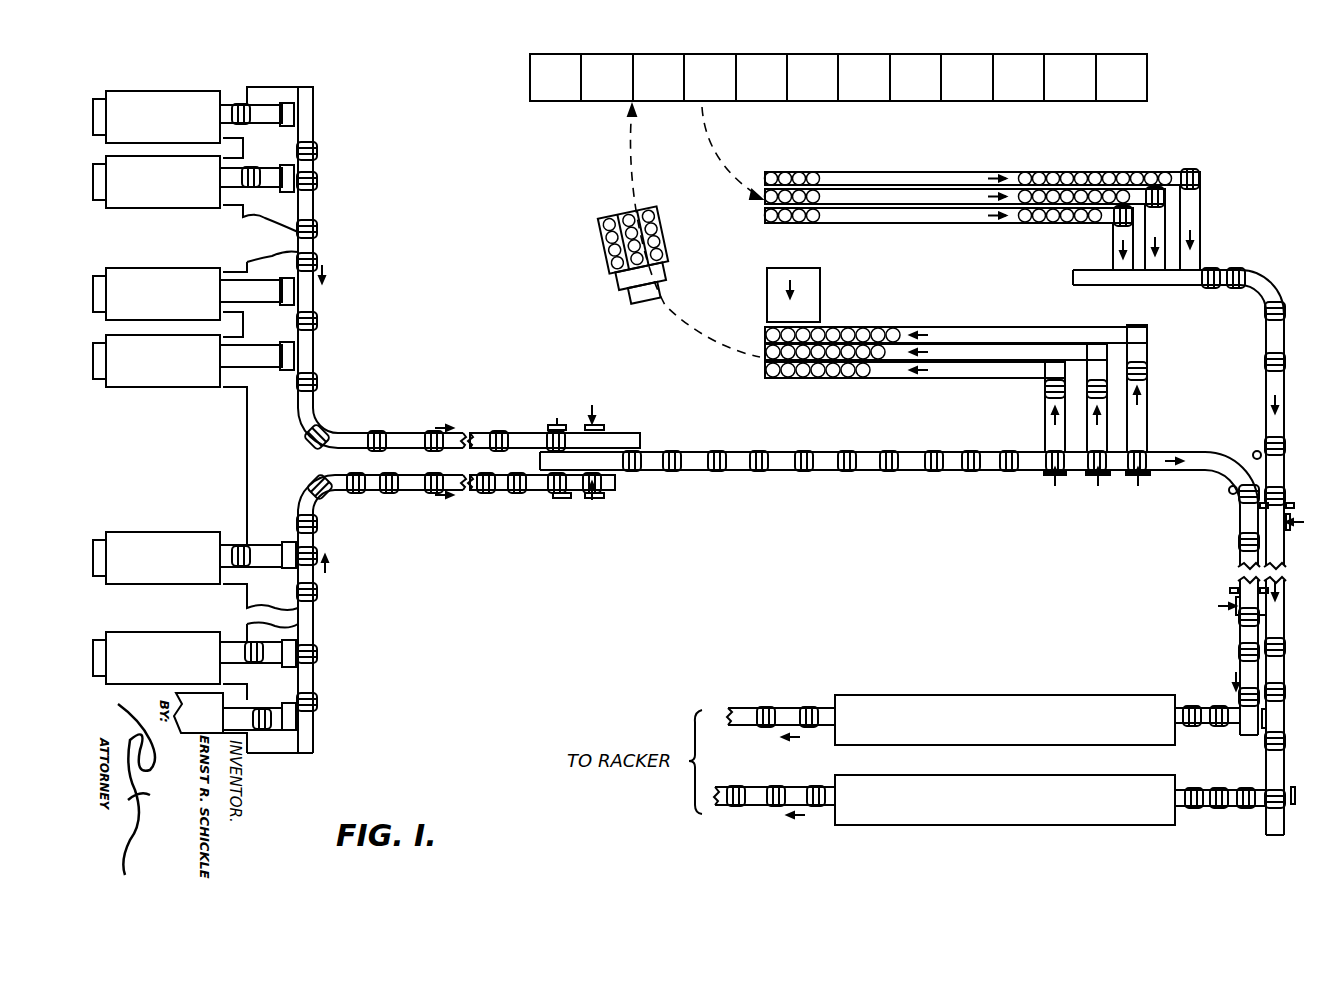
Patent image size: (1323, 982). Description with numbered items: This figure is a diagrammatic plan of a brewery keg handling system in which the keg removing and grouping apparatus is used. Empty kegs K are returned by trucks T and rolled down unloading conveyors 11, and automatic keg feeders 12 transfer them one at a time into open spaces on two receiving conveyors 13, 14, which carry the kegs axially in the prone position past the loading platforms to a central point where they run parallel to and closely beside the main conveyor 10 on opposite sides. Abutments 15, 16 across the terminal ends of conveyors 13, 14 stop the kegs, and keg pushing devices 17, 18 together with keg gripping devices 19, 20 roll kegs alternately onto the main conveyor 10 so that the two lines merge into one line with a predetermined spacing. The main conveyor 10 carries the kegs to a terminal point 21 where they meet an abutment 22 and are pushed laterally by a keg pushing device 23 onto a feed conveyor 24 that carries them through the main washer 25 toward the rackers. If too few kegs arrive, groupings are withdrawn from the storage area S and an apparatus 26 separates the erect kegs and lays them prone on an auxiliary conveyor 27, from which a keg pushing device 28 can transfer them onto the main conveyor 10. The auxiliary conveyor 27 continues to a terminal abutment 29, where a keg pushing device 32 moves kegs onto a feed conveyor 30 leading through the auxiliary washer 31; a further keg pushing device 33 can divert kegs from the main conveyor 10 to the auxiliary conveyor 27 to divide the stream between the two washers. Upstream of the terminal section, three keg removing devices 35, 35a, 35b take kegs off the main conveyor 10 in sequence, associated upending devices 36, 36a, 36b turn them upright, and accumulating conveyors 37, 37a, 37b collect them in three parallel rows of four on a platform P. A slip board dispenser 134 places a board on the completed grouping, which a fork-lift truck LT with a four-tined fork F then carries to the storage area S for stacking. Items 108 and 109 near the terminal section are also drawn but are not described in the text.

The main conveyor 10 is at (790, 470).
The unloading conveyor 11 is at (262, 108).
The automatic keg feeder 12 is at (288, 108).
The receiving conveyor 13 is at (320, 210).
The receiving conveyor 14 is at (340, 500).
The abutment 15 is at (650, 433).
The abutment 16 is at (615, 485).
The keg pushing device 17 is at (602, 425).
The keg pushing device 18 is at (600, 500).
The keg gripping device 19 is at (557, 418).
The keg gripping device 20 is at (561, 499).
The terminal point 21 is at (1248, 716).
The abutment 22 is at (1250, 735).
The keg pushing device 23 is at (1270, 718).
The feed conveyor 24 is at (1198, 712).
The main washer 25 is at (1100, 684).
The keg separating apparatus 26 is at (1082, 160).
The auxiliary conveyor 27 is at (1285, 390).
The keg pushing device 28 is at (1292, 512).
The terminal abutment 29 is at (1278, 827).
The feed conveyor 30 is at (1258, 808).
The auxiliary washer 31 is at (1128, 763).
The keg pushing device 32 is at (1297, 790).
The keg pushing device 33 is at (1230, 597).
The keg removing device 35 is at (1046, 478).
The keg removing device 35a is at (1092, 478).
The keg removing device 35b is at (1128, 480).
The keg upending device 36 is at (1052, 372).
The keg upending device 36a is at (1096, 350).
The keg upending device 36b is at (1137, 335).
The accumulating conveyor 37 is at (937, 374).
The accumulating conveyor 37a is at (948, 340).
The accumulating conveyor 37b is at (1004, 336).
The sensing switch 108 is at (1233, 494).
The sensing switch 109 is at (1258, 451).
The slip board dispenser 134 is at (812, 297).
The keg K is at (245, 124).
The platform P is at (820, 378).
The truck T is at (158, 412).
The storage area S is at (590, 110).
The fork F is at (602, 252).
The fork-lift truck LT is at (633, 286).